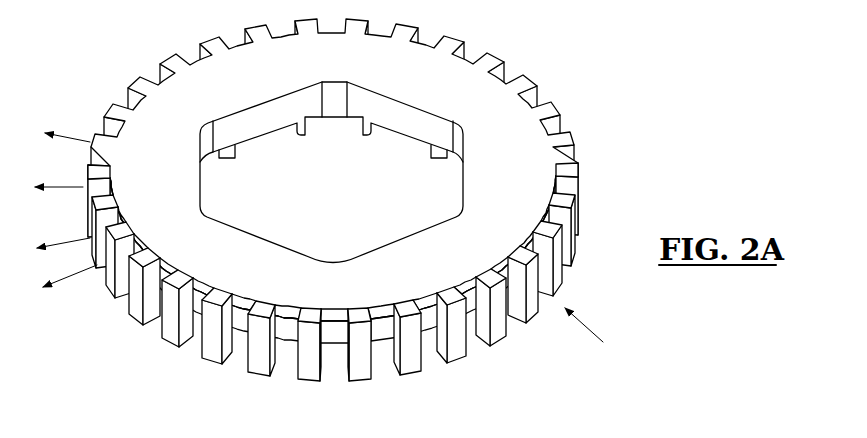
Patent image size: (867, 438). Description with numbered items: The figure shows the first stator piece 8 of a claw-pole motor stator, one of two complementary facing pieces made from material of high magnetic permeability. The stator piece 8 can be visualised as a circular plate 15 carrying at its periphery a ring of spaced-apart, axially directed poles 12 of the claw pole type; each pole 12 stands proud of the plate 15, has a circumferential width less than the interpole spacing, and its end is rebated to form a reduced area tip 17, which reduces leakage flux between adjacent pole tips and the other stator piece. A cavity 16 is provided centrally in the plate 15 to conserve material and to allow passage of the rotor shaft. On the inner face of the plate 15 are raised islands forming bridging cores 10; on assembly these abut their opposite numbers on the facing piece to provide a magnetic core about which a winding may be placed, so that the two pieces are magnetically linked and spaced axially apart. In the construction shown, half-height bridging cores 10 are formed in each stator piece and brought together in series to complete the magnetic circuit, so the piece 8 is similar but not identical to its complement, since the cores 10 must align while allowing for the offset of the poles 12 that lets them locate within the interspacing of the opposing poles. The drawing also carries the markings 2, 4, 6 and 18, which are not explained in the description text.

The direction arrow 2 is at (67, 132).
The direction arrow 4 is at (59, 180).
The direction arrow 6 is at (63, 220).
The stator piece 8 is at (330, 286).
The bridging core 10 is at (387, 150).
The pole 12 is at (525, 323).
The circular plate 15 is at (333, 215).
The cavity 16 is at (272, 243).
The reduced area tip 17 is at (487, 346).
The recess between tabs 18 is at (472, 340).